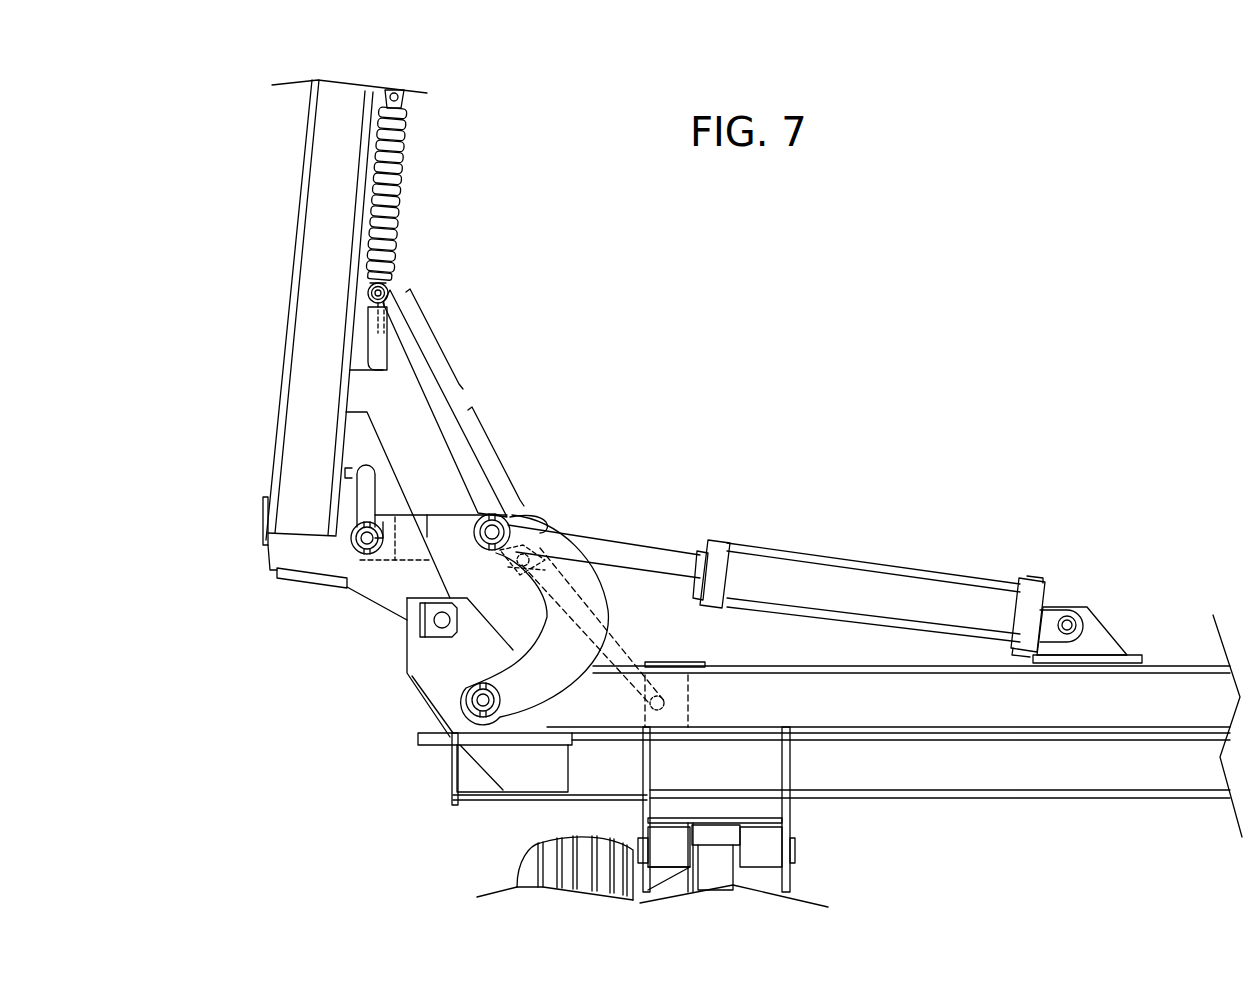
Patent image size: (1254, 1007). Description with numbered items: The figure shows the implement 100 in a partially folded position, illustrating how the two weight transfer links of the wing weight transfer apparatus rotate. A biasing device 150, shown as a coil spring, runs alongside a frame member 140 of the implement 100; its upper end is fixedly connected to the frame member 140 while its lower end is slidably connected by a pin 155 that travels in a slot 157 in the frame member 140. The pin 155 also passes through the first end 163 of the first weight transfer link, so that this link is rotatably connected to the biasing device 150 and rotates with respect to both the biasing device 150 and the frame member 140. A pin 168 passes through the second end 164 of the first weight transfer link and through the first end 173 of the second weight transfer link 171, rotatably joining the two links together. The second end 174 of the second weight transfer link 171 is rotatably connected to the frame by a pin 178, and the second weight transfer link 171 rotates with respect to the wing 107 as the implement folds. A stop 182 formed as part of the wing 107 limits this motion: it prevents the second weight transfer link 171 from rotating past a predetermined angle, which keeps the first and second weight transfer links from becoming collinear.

The implement 100 is at (889, 342).
The wing 107 is at (1197, 820).
The frame member 140 is at (289, 293).
The biasing device 150 is at (408, 183).
The pin 155 is at (390, 293).
The slot 157 is at (372, 373).
The first end of the first weight transfer link 163 is at (445, 403).
The second end of the first weight transfer link 164 is at (501, 478).
The pin 168 is at (526, 556).
The second weight transfer link 171 is at (623, 620).
The first end of the second weight transfer link 173 is at (537, 607).
The second end of the second weight transfer link 174 is at (630, 622).
The pin 178 is at (667, 703).
The stop 182 is at (707, 666).